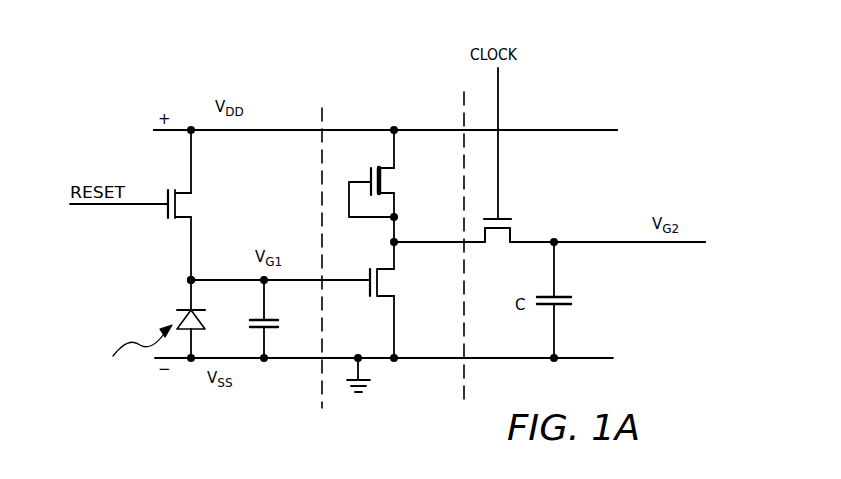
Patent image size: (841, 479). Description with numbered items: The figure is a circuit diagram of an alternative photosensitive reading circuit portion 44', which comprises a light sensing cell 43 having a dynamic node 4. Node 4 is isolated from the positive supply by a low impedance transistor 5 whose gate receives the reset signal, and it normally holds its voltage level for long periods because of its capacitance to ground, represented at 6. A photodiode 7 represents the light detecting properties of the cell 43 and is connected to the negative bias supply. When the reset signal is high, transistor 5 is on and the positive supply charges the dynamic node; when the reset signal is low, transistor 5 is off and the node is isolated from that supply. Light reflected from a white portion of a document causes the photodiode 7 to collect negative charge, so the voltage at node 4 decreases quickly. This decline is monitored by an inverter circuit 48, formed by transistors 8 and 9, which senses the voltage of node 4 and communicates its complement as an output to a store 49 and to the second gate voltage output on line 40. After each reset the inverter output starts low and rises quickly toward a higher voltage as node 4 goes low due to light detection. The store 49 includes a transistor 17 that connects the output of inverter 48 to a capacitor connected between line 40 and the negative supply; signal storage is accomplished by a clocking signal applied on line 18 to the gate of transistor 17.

The dynamic node 4 is at (189, 280).
The low impedance transistor 5 is at (182, 206).
The capacitance to ground 6 is at (270, 318).
The photodiode 7 is at (204, 324).
The transistor 8 is at (393, 288).
The transistor 9 is at (383, 180).
The transistor 17 is at (512, 227).
The clock line 18 is at (499, 163).
The output line 40 is at (651, 245).
The light sensing cell 43 is at (262, 115).
The photosensitive reading circuit portion 44' is at (140, 125).
The inverter circuit 48 is at (405, 118).
The store 49 is at (545, 100).